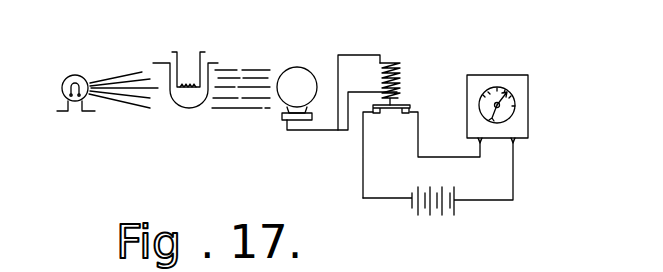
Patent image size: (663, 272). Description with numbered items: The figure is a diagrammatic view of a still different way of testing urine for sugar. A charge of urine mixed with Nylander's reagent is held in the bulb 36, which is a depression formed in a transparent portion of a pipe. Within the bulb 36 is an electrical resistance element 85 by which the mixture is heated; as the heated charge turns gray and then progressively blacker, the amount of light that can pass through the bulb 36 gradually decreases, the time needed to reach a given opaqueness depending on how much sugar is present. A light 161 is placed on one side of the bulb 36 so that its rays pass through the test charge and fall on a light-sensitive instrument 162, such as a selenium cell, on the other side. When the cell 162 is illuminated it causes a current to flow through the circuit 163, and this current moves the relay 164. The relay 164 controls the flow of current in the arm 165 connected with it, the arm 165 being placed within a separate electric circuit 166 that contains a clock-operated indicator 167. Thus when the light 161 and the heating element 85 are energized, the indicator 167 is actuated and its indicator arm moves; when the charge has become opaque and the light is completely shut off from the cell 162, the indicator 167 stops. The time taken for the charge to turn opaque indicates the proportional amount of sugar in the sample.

The light 161 is at (107, 79).
The bulb 36 is at (192, 108).
The electrical resistance element 85 is at (190, 72).
The light-sensitive instrument 162 is at (305, 82).
The circuit 163 is at (373, 56).
The relay 164 is at (400, 96).
The arm 165 is at (410, 106).
The electric circuit 166 is at (421, 136).
The clock-operated indicator 167 is at (518, 104).